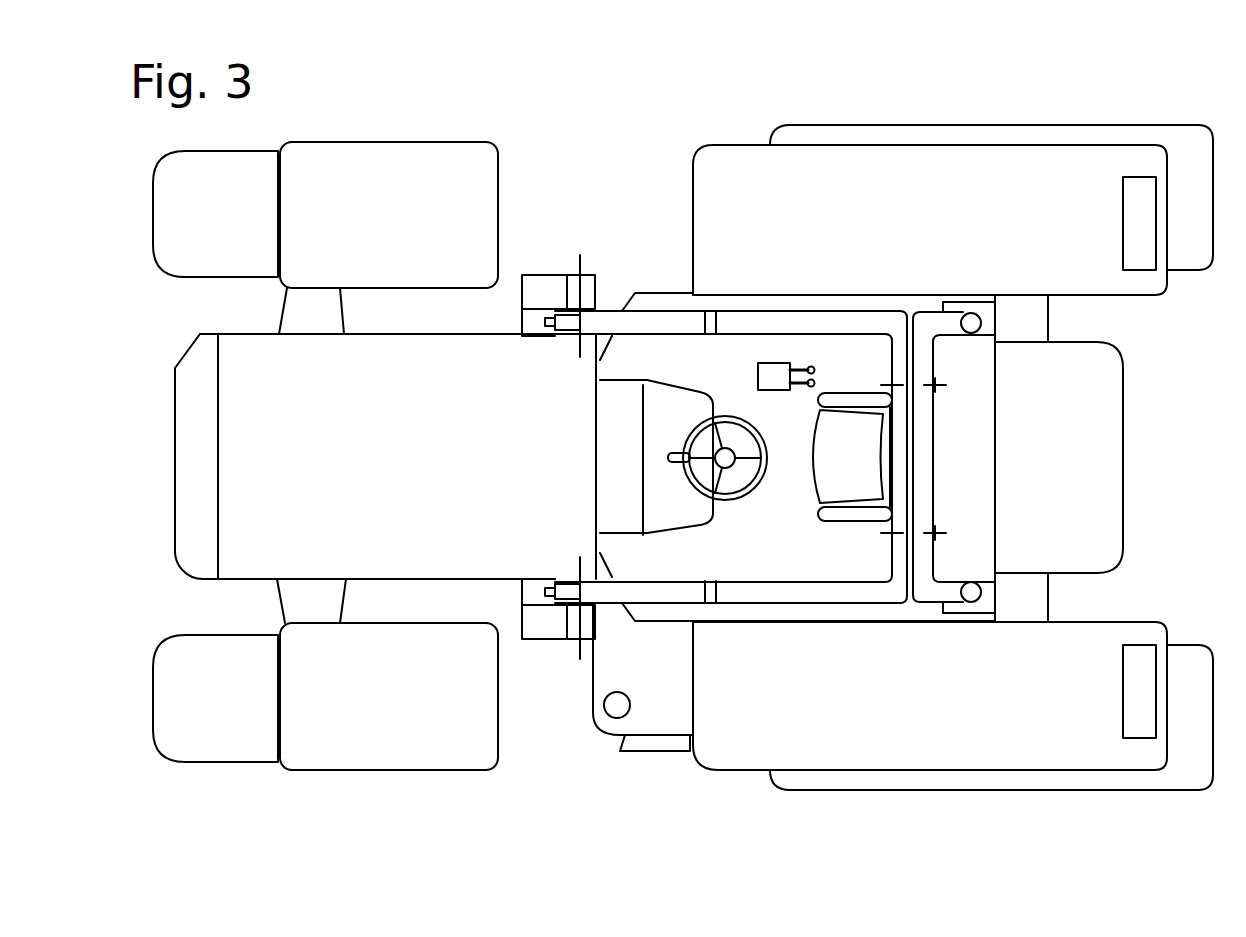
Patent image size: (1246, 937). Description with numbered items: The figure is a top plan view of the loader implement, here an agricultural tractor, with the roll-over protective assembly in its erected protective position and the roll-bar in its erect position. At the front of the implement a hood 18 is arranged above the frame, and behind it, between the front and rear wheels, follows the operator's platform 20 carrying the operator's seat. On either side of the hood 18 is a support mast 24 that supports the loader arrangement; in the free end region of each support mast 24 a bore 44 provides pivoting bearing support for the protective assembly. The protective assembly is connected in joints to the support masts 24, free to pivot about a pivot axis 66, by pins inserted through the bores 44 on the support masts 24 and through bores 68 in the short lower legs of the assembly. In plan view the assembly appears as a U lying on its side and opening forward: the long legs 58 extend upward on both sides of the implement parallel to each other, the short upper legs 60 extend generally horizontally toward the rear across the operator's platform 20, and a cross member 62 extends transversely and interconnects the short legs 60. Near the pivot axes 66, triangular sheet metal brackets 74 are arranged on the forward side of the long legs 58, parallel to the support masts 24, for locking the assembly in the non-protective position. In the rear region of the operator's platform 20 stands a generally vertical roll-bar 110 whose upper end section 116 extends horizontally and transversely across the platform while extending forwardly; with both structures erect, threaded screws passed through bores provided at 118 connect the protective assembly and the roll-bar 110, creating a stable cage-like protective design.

The hood 18 is at (233, 458).
The operator's platform 20 is at (723, 553).
The support mast 24 is at (538, 285).
The bore 44 is at (588, 277).
The long leg 58 is at (677, 322).
The short leg 60 is at (905, 315).
The cross member 62 is at (898, 370).
The pivot axis 66 is at (580, 255).
The bore 68 is at (577, 575).
The bracket 74 is at (545, 321).
The roll-bar 110 is at (935, 425).
The upper end section 116 is at (920, 481).
The bores 118 is at (880, 385).